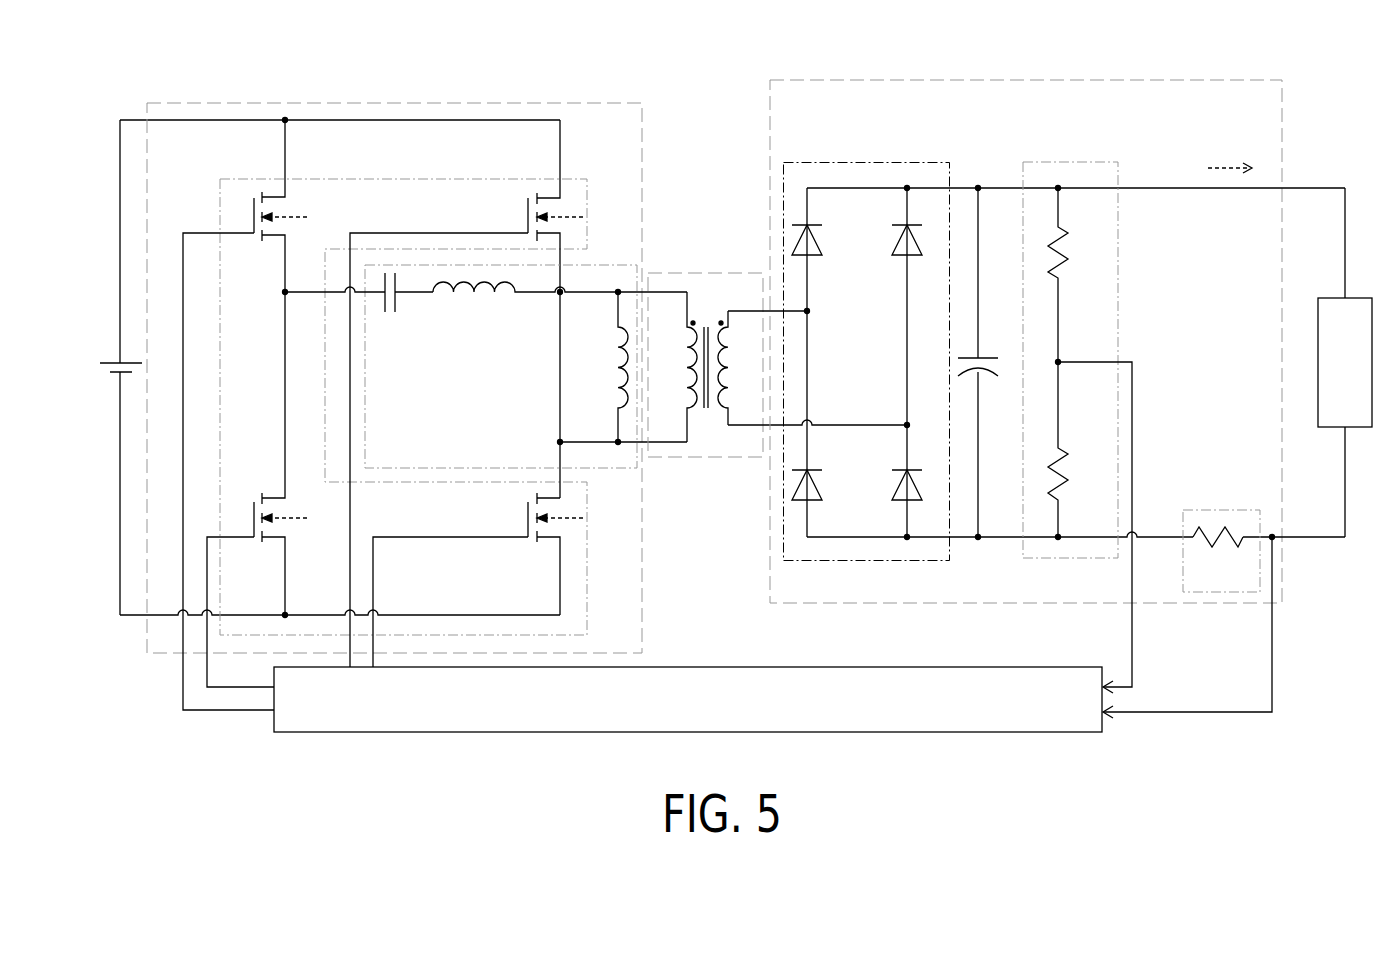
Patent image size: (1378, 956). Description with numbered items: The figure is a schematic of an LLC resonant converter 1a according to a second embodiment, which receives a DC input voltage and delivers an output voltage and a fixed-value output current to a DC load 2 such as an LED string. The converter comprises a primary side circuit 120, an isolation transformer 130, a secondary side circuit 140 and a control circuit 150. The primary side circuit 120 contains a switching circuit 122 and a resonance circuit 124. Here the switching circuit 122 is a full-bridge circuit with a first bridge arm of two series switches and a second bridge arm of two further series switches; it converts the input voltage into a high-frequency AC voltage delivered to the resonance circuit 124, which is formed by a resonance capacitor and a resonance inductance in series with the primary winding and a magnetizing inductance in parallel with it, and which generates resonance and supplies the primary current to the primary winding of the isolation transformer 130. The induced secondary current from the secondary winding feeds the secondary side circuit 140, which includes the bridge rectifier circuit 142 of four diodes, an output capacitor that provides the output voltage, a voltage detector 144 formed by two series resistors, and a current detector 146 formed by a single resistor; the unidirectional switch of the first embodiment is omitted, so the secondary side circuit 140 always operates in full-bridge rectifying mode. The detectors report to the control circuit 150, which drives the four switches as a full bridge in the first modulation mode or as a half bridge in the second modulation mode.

The LLC resonant converter 1a is at (1367, 75).
The primary side circuit 120 is at (600, 103).
The switching circuit 122 is at (450, 179).
The resonance circuit 124 is at (610, 265).
The isolation transformer 130 is at (678, 273).
The secondary side circuit 140 is at (820, 80).
The bridge rectifier circuit 142 is at (893, 162).
The voltage detector 144 is at (1095, 162).
The current detector 146 is at (1195, 510).
The control circuit 150 is at (705, 667).
The DC load 2 is at (1355, 297).